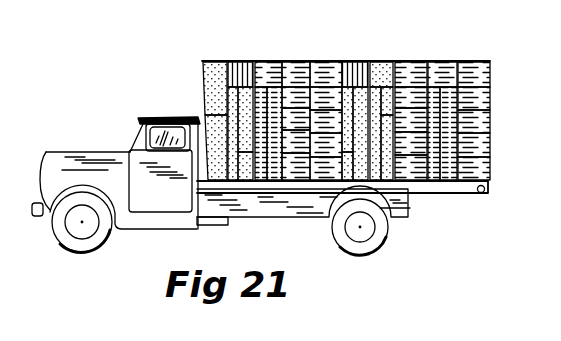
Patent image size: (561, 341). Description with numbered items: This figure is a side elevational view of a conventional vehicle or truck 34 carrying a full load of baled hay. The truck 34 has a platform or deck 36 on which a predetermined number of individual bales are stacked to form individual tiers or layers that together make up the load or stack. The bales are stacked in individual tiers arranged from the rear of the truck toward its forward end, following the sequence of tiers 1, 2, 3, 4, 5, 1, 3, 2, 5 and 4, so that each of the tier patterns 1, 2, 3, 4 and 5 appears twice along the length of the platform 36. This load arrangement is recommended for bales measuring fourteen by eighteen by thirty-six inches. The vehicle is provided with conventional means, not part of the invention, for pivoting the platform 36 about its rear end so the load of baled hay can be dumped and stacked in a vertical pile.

The tier 1 is at (322, 60).
The tier 2 is at (268, 60).
The tier 3 is at (298, 60).
The tier 4 is at (205, 60).
The tier 5 is at (238, 60).
The vehicle 34 is at (408, 217).
The platform 36 is at (486, 193).